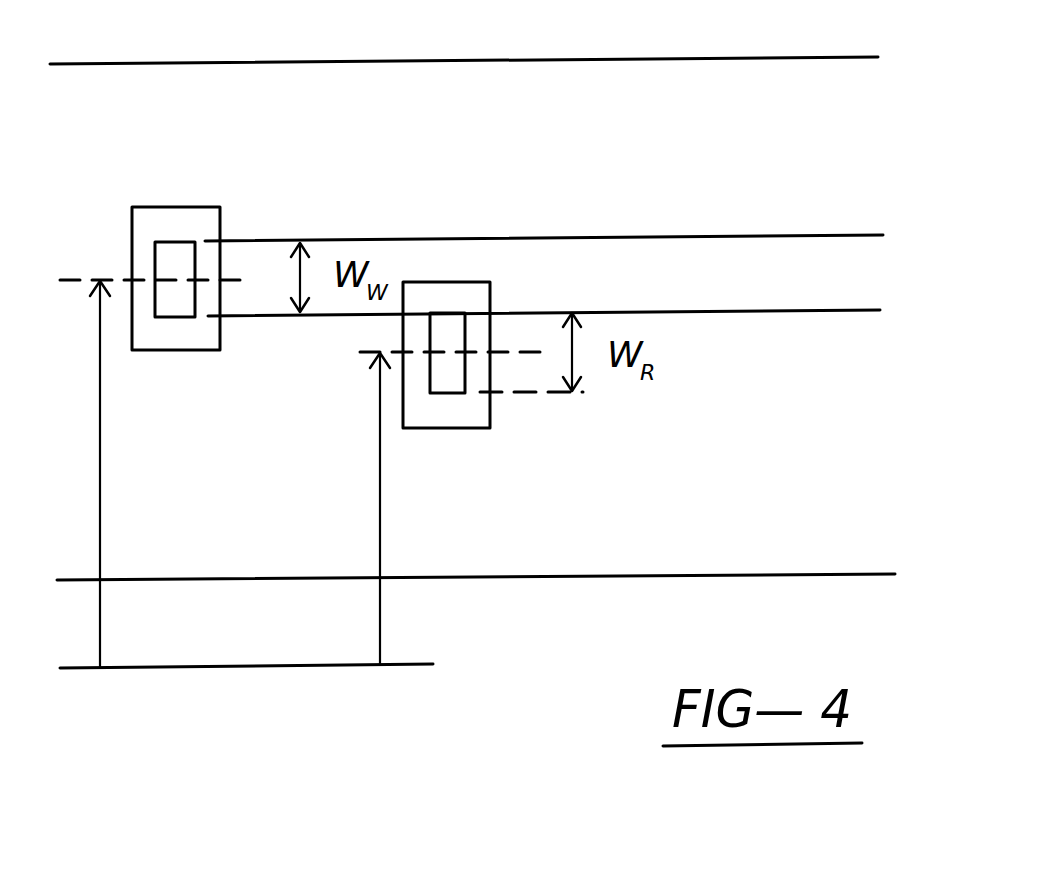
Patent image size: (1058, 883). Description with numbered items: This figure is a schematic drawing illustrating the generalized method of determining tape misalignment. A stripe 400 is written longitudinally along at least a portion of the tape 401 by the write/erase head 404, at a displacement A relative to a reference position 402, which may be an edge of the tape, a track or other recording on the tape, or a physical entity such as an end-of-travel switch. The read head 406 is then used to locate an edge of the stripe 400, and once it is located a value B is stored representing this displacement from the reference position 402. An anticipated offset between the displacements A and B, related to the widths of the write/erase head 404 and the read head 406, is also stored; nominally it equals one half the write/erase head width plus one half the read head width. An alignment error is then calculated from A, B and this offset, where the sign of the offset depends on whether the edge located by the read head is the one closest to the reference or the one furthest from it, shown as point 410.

The stripe 400 is at (730, 245).
The tape 401 is at (628, 78).
The reference position 402 is at (315, 670).
The write/erase head 404 is at (231, 181).
The read head 406 is at (471, 288).
The point 410 is at (408, 238).
The displacement A is at (102, 500).
The value B is at (380, 547).